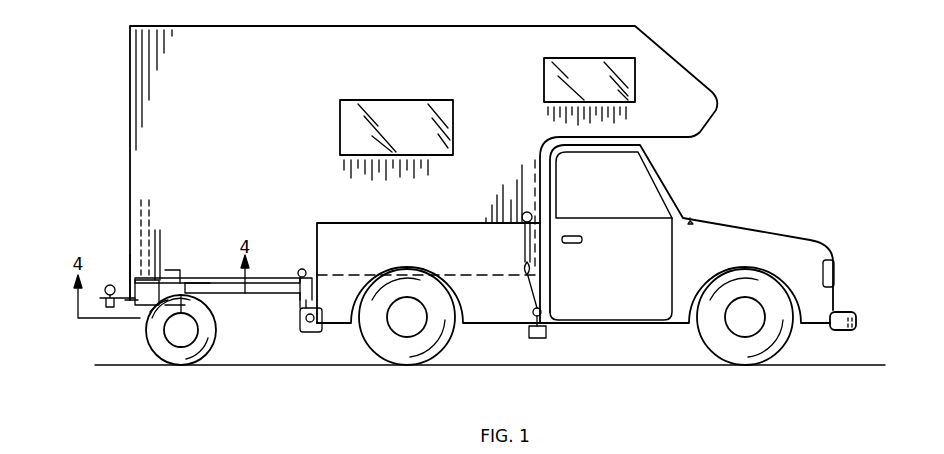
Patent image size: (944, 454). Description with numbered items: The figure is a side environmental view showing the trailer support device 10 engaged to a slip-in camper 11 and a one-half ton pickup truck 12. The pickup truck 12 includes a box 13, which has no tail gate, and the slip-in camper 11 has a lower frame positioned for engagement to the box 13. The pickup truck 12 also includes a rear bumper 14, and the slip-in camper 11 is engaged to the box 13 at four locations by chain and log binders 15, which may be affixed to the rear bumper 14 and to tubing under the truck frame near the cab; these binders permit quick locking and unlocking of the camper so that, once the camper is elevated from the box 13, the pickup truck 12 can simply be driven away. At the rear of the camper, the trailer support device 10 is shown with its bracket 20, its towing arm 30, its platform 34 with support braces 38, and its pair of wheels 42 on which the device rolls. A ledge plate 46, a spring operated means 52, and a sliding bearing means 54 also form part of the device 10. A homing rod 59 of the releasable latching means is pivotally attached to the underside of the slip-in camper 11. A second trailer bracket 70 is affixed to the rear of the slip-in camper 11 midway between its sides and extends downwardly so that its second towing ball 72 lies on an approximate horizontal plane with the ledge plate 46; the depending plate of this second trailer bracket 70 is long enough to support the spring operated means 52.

The trailer support device 10 is at (262, 346).
The slip-in camper 11 is at (150, 147).
The pickup truck 12 is at (725, 237).
The box 13 is at (485, 253).
The rear bumper 14 is at (316, 330).
The chain and log binders 15 is at (545, 287).
The bracket 20 is at (318, 283).
The towing arm 30 is at (272, 302).
The platform 34 is at (176, 282).
The support braces 38 is at (162, 272).
The wheels 42 is at (170, 328).
The ledge plate 46 is at (150, 312).
The spring operated means 52 is at (125, 300).
The sliding bearing means 54 is at (200, 282).
The homing rod 59 is at (152, 290).
The second trailer bracket 70 is at (128, 296).
The second towing ball 72 is at (103, 292).